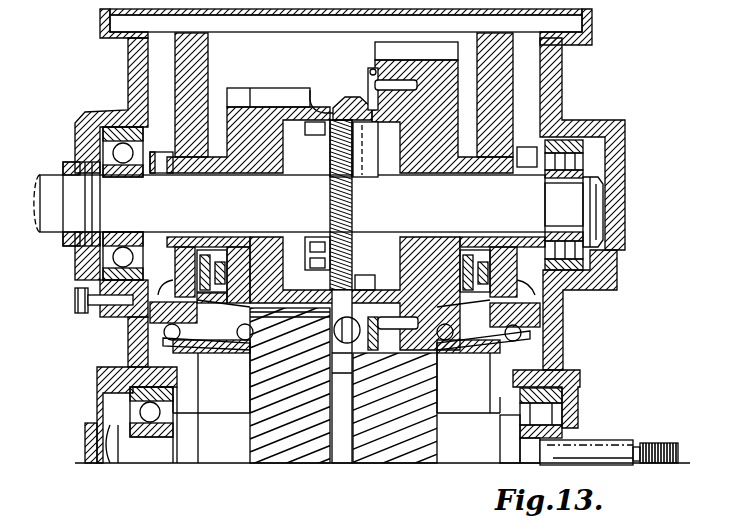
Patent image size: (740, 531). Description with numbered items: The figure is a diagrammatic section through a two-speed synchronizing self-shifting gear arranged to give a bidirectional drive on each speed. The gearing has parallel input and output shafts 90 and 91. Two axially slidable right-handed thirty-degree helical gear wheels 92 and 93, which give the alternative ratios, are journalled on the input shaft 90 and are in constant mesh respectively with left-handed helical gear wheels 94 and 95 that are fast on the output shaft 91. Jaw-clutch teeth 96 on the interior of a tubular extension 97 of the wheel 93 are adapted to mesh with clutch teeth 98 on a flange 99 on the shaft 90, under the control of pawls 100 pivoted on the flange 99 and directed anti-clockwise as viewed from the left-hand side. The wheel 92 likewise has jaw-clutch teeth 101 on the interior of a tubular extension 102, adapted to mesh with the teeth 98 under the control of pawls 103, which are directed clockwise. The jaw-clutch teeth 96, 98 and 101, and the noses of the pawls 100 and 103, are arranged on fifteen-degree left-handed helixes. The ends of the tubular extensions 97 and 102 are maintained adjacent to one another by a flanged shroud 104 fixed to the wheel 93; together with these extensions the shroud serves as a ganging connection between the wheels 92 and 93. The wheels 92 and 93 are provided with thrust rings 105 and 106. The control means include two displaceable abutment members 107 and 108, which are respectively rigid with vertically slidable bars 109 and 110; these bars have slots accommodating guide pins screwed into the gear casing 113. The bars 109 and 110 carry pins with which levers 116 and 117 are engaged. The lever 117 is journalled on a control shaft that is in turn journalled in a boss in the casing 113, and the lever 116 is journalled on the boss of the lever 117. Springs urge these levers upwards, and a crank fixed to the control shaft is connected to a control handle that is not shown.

The input shaft 90 is at (52, 228).
The output shaft 91 is at (597, 442).
The helical gear wheel 92 is at (237, 93).
The helical gear wheel 93 is at (375, 50).
The left-handed helical gear wheel 94 is at (250, 378).
The left-handed helical gear wheel 95 is at (437, 400).
The jaw-clutch teeth 96 is at (365, 280).
The tubular extension 97 is at (362, 97).
The clutch teeth 98 is at (352, 198).
The flange 99 is at (330, 158).
The pawls 100 is at (378, 172).
The jaw-clutch teeth 101 is at (328, 135).
The tubular extension 102 is at (300, 88).
The pawls 103 is at (320, 242).
The flanged shroud 104 is at (318, 98).
The thrust ring 105 is at (128, 322).
The thrust ring 106 is at (562, 300).
The displaceable abutment member 107 is at (128, 345).
The displaceable abutment member 108 is at (563, 333).
The vertically slidable bar 109 is at (200, 406).
The vertically slidable bar 110 is at (490, 405).
The gear casing 113 is at (556, 85).
The lever 116 is at (210, 348).
The lever 117 is at (482, 352).